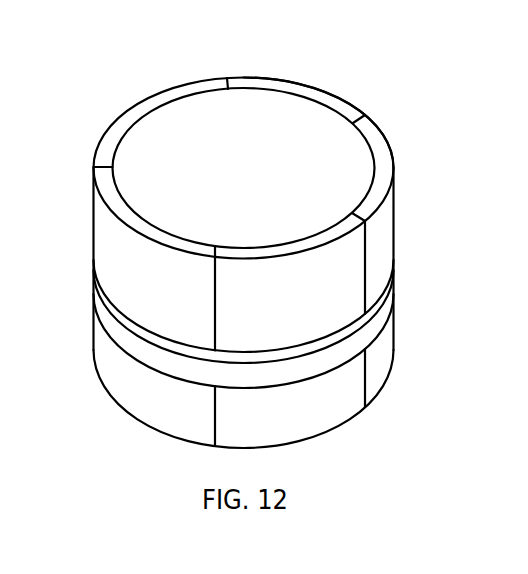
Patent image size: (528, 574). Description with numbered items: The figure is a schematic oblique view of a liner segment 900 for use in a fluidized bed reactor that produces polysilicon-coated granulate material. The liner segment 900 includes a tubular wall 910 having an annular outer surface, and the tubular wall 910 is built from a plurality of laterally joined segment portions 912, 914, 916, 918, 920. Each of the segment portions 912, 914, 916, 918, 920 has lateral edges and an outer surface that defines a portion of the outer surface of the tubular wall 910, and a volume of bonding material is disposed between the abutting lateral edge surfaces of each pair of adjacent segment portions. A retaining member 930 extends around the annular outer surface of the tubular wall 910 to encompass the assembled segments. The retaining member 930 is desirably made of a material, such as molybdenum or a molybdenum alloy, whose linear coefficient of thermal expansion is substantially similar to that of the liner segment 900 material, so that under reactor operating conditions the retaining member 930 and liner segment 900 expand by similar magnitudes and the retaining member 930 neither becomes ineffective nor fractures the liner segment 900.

The liner segment 900 is at (246, 62).
The tubular wall 910 is at (423, 235).
The segment portion 912 is at (127, 402).
The segment portion 914 is at (302, 440).
The segment portion 916 is at (380, 388).
The segment portion 918 is at (330, 100).
The segment portion 920 is at (155, 103).
The retaining member 930 is at (107, 317).